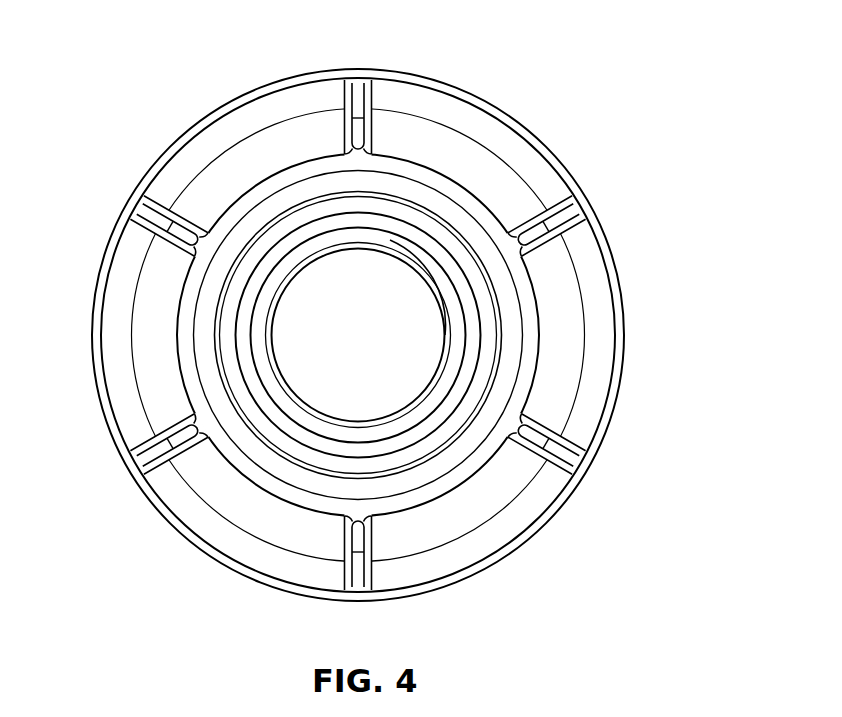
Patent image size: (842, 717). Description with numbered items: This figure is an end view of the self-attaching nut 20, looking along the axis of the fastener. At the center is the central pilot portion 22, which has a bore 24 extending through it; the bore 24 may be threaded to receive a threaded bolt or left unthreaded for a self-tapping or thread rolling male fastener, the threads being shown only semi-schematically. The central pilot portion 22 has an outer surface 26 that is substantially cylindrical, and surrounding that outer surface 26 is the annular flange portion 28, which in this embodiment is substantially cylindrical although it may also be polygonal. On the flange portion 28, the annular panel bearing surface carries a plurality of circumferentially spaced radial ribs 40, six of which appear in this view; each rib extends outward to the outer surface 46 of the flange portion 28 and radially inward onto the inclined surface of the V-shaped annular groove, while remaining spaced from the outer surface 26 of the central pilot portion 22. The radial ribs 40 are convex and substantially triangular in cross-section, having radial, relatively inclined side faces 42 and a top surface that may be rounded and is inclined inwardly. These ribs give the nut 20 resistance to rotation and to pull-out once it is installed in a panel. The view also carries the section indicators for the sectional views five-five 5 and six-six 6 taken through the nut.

The self-attaching nut 20 is at (594, 124).
The central pilot portion 22 is at (431, 212).
The bore 24 is at (444, 334).
The outer surface 26 is at (526, 336).
The flange portion 28 is at (634, 302).
The radial ribs 40 is at (589, 458).
The inclined side faces 42 is at (137, 455).
The outer surface of the flange portion 46 is at (548, 525).
The section line 5- 5 is at (123, 203).
The section line 6- 6 is at (85, 336).